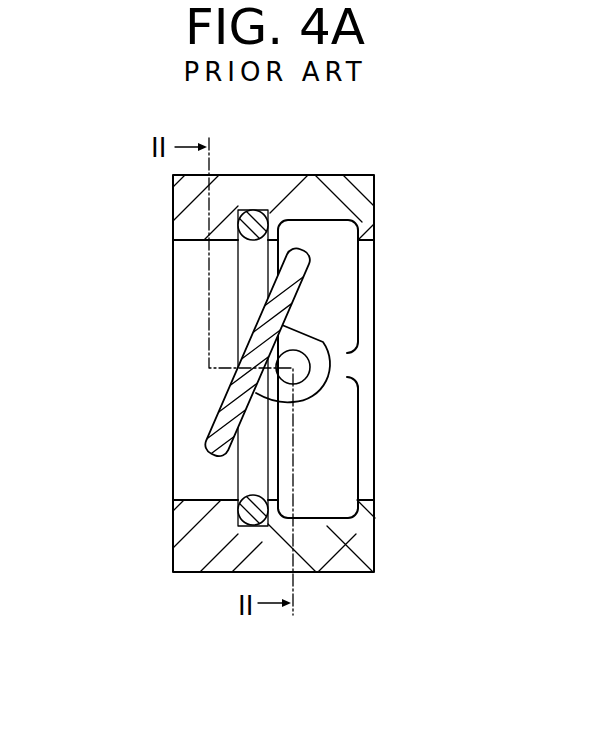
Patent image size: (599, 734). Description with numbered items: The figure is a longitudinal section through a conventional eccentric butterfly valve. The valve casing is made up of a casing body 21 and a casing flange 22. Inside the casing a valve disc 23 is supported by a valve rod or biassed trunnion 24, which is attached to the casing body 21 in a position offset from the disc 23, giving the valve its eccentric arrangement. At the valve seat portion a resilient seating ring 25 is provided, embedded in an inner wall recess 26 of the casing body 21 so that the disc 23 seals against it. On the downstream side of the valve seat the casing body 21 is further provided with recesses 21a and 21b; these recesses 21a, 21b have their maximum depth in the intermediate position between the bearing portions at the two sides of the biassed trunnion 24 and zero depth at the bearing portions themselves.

The casing body 21 is at (377, 198).
The recess 21a is at (323, 217).
The recess 21b is at (318, 518).
The casing flange 22 is at (173, 214).
The valve disc 23 is at (302, 264).
The biassed trunnion 24 is at (306, 352).
The resilient seating ring 25 is at (255, 210).
The inner wall recess 26 is at (276, 196).